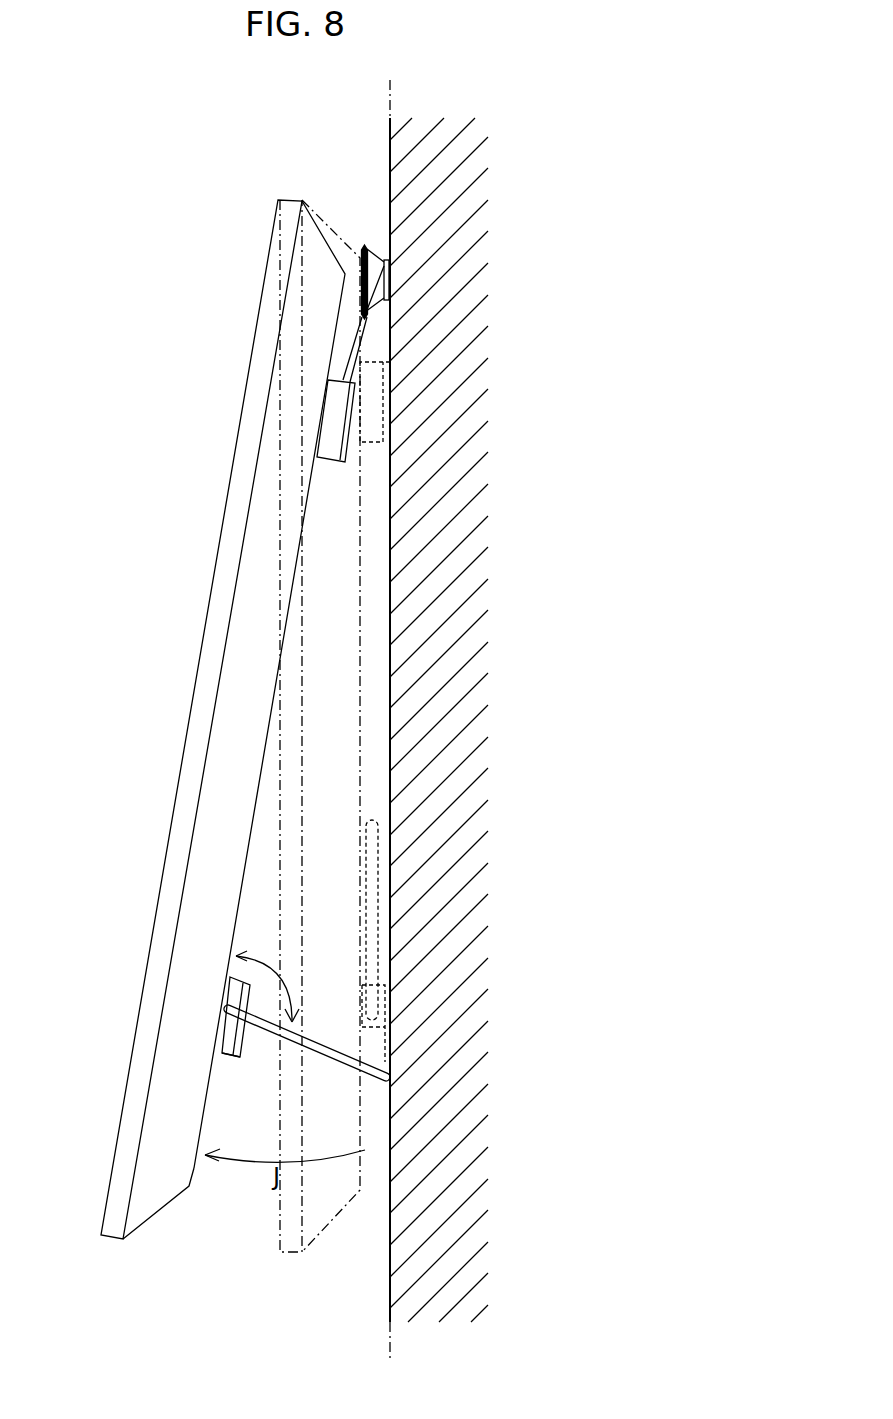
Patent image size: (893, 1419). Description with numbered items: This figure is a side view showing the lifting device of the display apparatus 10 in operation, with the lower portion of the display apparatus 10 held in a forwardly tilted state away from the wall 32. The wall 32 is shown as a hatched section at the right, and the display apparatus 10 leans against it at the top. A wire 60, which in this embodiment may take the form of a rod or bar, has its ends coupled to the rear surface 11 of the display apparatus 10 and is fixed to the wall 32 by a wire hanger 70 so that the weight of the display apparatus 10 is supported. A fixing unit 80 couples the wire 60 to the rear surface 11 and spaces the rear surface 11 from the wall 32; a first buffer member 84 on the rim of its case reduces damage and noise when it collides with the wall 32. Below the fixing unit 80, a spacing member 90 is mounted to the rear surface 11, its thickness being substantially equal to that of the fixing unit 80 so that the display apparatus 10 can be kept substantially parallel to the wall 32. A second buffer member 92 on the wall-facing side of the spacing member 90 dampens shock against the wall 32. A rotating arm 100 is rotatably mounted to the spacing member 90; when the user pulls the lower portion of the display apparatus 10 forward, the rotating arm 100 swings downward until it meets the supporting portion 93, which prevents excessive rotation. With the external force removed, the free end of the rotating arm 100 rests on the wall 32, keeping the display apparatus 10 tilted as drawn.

The display apparatus 10 is at (204, 528).
The rear surface 11 is at (195, 1172).
The wall 32 is at (392, 764).
The wire 60 is at (362, 345).
The wire hanger 70 is at (365, 247).
The fixing unit 80 is at (337, 416).
The first buffer member 84 is at (345, 458).
The spacing member 90 is at (223, 1053).
The second buffer member 92 is at (235, 1056).
The supporting portion 93 is at (231, 1010).
The rotating arm 100 is at (344, 1054).